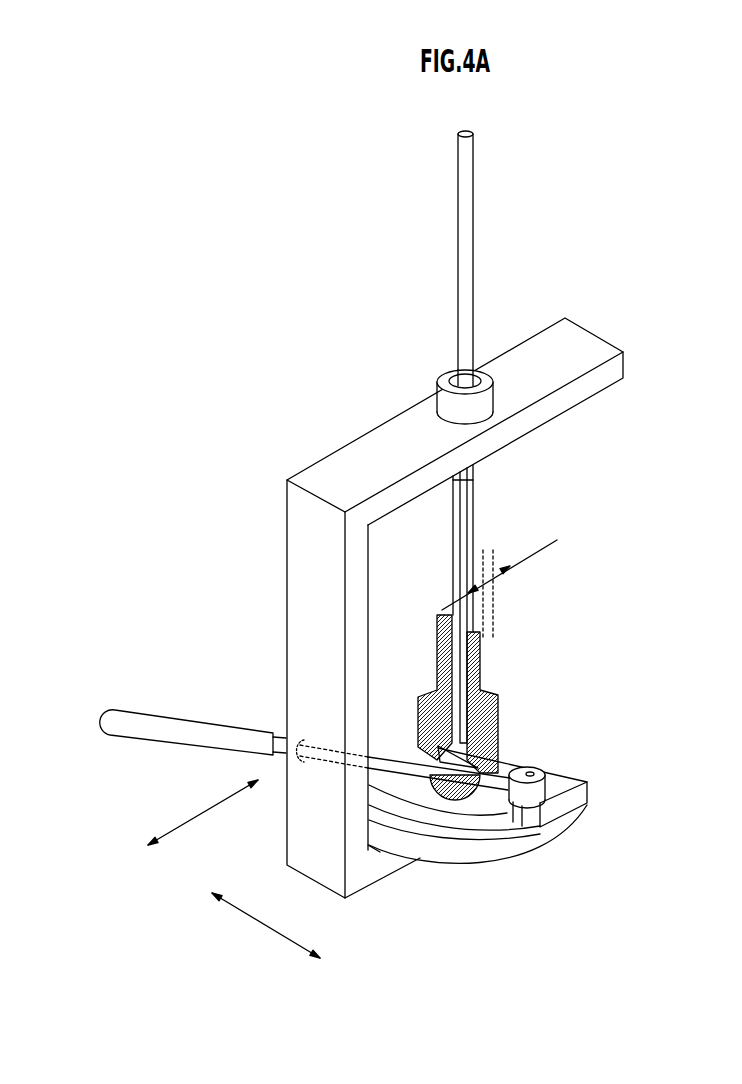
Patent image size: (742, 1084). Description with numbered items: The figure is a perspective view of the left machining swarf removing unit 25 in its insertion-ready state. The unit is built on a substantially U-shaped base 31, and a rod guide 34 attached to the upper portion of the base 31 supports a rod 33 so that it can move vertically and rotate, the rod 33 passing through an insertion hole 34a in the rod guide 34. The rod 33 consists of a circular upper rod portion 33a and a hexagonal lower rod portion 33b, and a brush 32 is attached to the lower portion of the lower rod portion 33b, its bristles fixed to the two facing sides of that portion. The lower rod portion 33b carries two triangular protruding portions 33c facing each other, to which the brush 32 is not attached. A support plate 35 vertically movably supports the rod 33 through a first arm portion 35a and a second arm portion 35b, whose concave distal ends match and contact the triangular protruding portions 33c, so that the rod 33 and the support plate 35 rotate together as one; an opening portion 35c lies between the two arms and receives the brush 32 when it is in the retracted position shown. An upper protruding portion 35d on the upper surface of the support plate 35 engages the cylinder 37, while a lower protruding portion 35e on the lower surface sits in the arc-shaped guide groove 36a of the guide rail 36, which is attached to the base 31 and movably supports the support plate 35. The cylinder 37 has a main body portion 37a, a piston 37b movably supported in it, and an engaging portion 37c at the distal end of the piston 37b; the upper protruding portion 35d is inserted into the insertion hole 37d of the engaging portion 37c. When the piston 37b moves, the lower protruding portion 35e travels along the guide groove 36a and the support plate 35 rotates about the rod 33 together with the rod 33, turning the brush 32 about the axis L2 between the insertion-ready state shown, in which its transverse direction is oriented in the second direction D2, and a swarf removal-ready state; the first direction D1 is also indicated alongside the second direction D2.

The left machining swarf removing unit 25 is at (455, 523).
The base 31 is at (595, 340).
The brush 32 is at (499, 668).
The rod 33 is at (471, 437).
The upper rod portion 33a is at (467, 265).
The lower rod portion 33b is at (469, 526).
The triangular protruding portion 33c is at (452, 540).
The rod guide 34 is at (443, 367).
The insertion hole 34a is at (446, 376).
The support plate 35 is at (539, 730).
The first arm portion 35a is at (413, 717).
The second arm portion 35b is at (548, 720).
The opening portion 35c is at (478, 750).
The upper protruding portion 35d is at (582, 773).
The lower protruding portion 35e is at (588, 796).
The guide rail 36 is at (480, 847).
The guide groove 36a is at (428, 815).
The cylinder 37 is at (323, 760).
The main body portion 37a is at (243, 736).
The piston 37b is at (394, 757).
The engaging portion 37c is at (522, 828).
The insertion hole 37d is at (533, 768).
The axis line L2 is at (499, 575).
The direction D1 is at (268, 927).
The second direction D2 is at (205, 811).